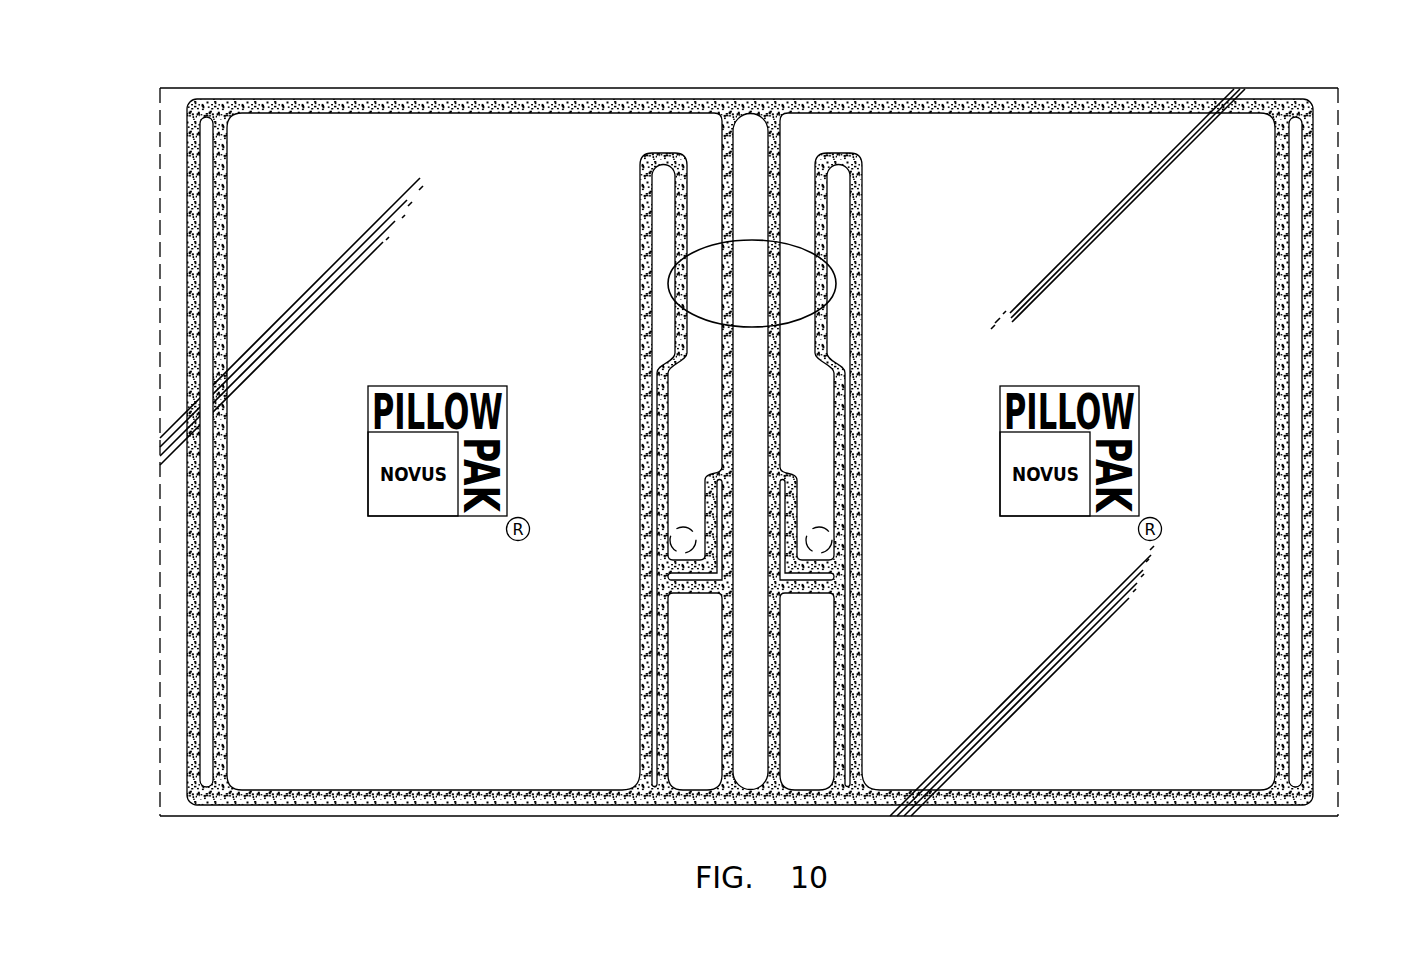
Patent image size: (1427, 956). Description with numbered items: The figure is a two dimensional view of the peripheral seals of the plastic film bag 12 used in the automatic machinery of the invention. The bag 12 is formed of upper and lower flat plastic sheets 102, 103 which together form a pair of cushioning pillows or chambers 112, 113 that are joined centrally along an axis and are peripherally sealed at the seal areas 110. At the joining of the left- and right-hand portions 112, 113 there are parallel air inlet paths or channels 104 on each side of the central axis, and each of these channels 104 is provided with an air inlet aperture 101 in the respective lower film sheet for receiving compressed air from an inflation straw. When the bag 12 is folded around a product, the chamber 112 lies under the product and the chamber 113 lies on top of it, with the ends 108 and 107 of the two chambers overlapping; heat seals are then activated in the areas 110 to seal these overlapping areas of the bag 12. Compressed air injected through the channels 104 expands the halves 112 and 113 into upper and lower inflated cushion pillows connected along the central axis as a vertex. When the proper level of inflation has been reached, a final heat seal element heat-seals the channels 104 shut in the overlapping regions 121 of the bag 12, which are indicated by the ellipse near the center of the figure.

The bag 12 is at (148, 84).
The air inlet aperture 101 is at (673, 557).
The upper flat plastic sheet 102 is at (1094, 796).
The lower flat plastic sheet 103 is at (1209, 826).
The air inlet path or channel 104 is at (705, 180).
The end of air chamber 113 107 is at (1293, 297).
The end of air chamber 112 108 is at (183, 585).
The peripheral seal area 110 is at (210, 195).
The cushioning pillow or chamber 112 is at (367, 175).
The cushioning pillow or chamber 113 is at (1055, 207).
The overlapping region 121 is at (837, 278).